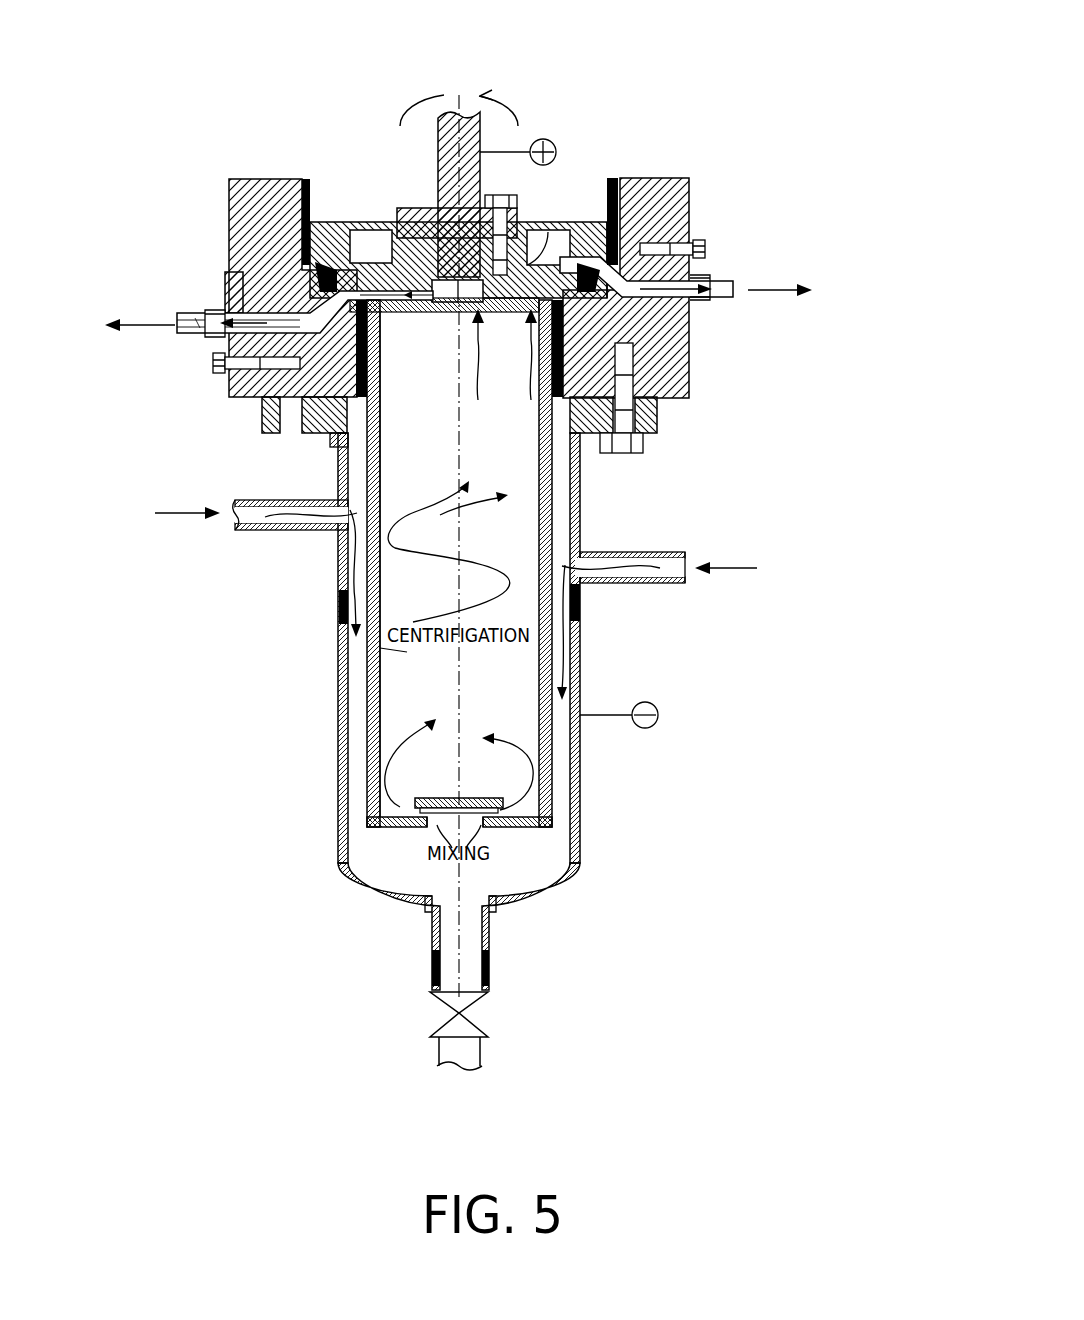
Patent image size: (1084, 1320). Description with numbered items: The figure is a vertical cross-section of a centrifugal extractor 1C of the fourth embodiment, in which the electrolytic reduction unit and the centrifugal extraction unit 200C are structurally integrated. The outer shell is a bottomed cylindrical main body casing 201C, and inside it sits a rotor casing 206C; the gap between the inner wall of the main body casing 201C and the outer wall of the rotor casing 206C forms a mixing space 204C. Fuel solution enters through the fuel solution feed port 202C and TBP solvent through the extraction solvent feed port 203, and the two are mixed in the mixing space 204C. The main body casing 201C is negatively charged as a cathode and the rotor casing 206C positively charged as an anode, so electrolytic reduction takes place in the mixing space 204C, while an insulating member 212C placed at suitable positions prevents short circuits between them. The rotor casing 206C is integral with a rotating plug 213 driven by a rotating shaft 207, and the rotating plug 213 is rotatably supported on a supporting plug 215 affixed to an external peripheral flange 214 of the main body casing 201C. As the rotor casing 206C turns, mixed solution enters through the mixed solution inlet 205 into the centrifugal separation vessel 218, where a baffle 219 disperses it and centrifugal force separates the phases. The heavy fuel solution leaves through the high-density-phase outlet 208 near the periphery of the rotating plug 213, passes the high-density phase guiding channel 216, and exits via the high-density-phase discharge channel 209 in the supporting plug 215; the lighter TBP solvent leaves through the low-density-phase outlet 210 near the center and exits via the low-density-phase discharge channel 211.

The centrifugal extractor 1C is at (806, 38).
The centrifugal extraction unit 200C is at (708, 88).
The main body casing 201C is at (367, 690).
The fuel solution feed port 202C is at (687, 577).
The extraction solvent feed port 203 is at (236, 517).
The mixing space 204C is at (352, 797).
The mixed solution inlet 205 is at (484, 824).
The rotor casing 206C is at (368, 746).
The rotating shaft 207 is at (437, 148).
The high-density-phase outlet 208 is at (534, 312).
The high-density-phase discharge channel 209 is at (734, 283).
The low-density-phase outlet 210 is at (477, 312).
The low-density-phase discharge channel 211 is at (172, 338).
The insulating member 212C is at (520, 967).
The rotating plug 213 is at (373, 222).
The external peripheral flange 214 is at (262, 415).
The supporting plug 215 is at (691, 182).
The high-density phase guiding channel 216 is at (600, 222).
The centrifugal separation vessel 218 is at (407, 652).
The baffle 219 is at (432, 797).